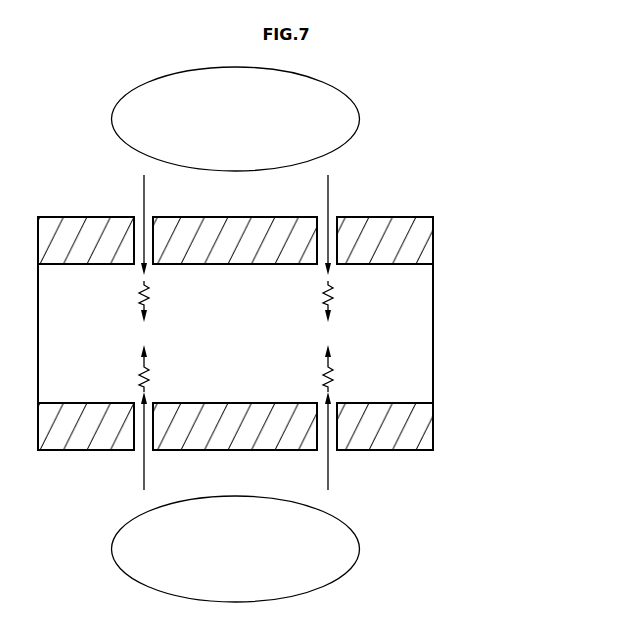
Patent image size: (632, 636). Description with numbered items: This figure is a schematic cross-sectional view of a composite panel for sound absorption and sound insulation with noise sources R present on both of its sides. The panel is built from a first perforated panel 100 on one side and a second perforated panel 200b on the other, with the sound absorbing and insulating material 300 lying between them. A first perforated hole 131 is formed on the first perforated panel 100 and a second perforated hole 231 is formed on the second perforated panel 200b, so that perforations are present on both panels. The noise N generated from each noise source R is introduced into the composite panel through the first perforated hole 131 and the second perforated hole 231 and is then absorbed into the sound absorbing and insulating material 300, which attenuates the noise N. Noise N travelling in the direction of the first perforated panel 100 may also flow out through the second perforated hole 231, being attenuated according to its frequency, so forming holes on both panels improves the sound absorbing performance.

The first perforated panel 100 is at (432, 425).
The second perforated panel 200b is at (433, 240).
The sound absorbing and insulating material 300 is at (430, 325).
The second perforated hole 231 is at (139, 236).
The first perforated hole 131 is at (139, 440).
The noise source R is at (360, 119).
The noise N is at (328, 470).